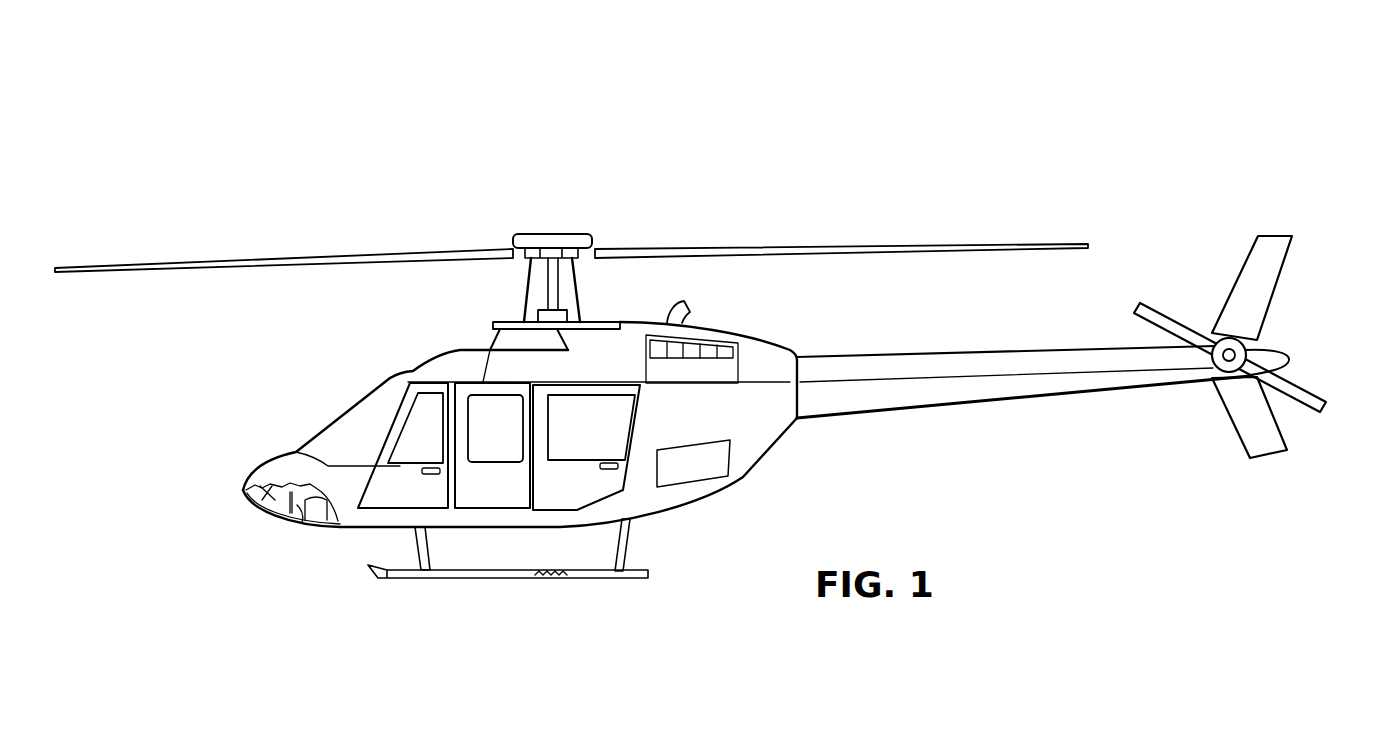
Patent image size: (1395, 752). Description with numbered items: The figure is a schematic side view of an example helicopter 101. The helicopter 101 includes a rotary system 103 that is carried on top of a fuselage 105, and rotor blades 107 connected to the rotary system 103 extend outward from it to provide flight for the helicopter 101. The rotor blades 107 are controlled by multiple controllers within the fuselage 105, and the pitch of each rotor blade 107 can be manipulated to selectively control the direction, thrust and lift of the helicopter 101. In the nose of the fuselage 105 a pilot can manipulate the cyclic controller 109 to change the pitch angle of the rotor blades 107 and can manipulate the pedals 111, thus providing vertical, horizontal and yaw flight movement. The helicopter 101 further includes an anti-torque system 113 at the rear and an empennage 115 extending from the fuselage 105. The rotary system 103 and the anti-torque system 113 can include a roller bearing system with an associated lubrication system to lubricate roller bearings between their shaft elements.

The helicopter 101 is at (336, 124).
The rotary system 103 is at (477, 196).
The fuselage 105 is at (382, 381).
The rotor blades 107 is at (862, 246).
The cyclic controller 109 is at (305, 519).
The pedals 111 is at (268, 498).
The anti-torque system 113 is at (1335, 324).
The empennage 115 is at (1142, 393).